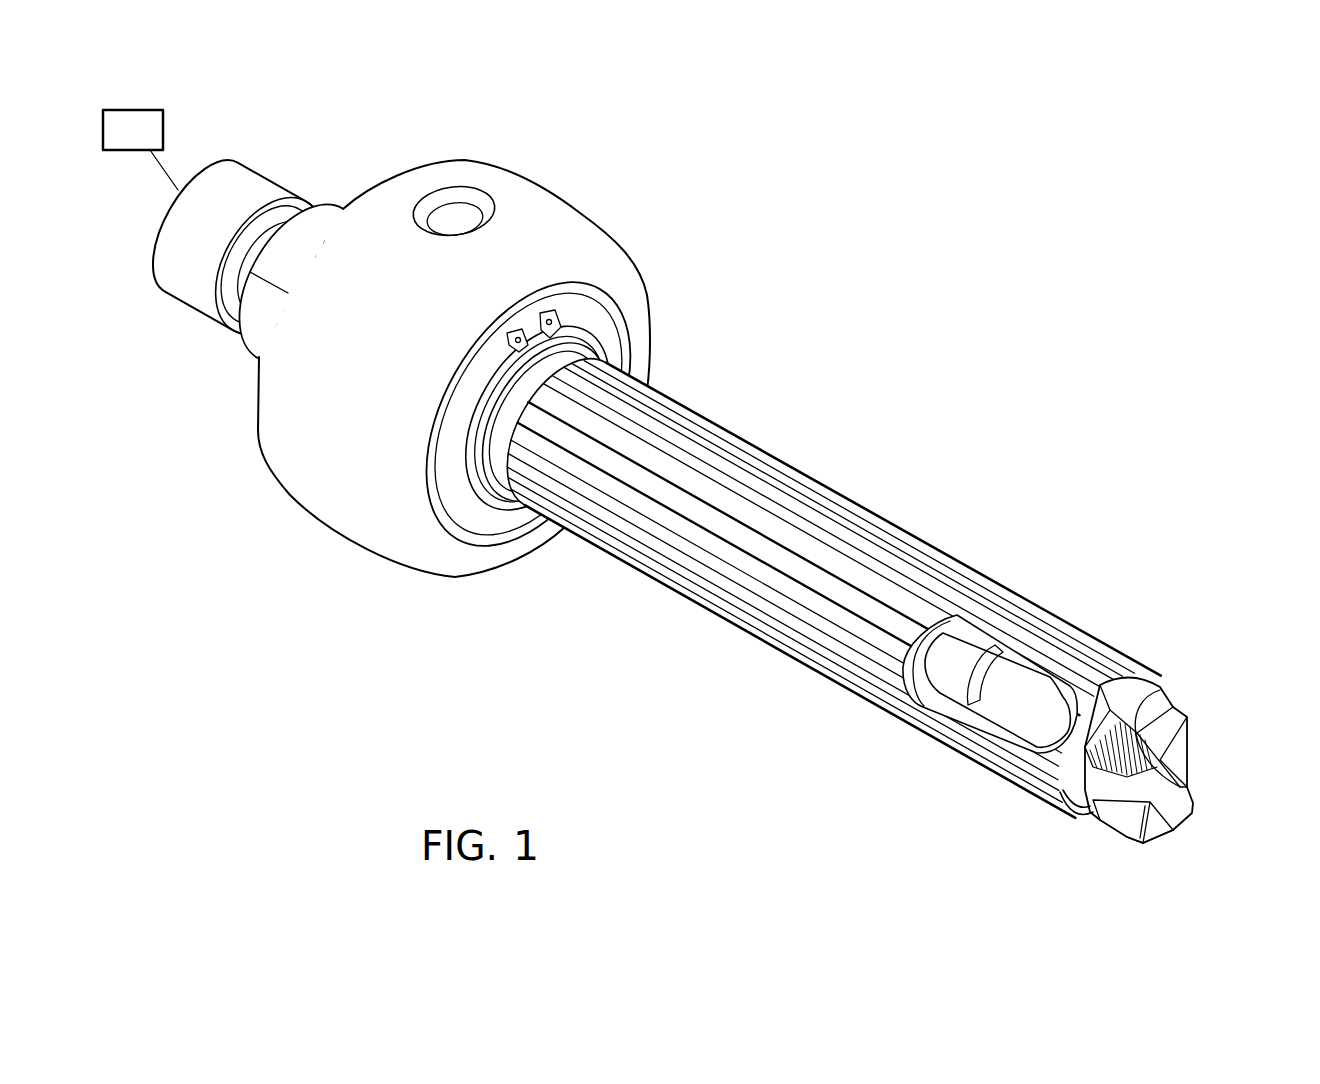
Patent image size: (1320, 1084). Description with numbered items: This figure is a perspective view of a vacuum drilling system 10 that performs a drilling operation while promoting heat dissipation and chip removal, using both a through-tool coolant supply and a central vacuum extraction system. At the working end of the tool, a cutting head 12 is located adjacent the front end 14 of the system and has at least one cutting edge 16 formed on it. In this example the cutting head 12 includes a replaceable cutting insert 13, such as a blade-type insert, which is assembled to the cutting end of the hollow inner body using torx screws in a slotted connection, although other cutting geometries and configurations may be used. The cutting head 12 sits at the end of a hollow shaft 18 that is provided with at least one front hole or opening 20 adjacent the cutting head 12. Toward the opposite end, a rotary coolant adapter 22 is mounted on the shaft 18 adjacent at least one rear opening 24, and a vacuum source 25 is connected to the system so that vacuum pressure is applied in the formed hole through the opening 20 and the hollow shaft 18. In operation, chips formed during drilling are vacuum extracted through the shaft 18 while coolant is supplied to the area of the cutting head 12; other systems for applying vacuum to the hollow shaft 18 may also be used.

The vacuum drilling system 10 is at (897, 272).
The cutting head 12 is at (1185, 812).
The replaceable cutting insert 13 is at (1188, 767).
The front end 14 is at (1141, 866).
The cutting edge 16 is at (1121, 772).
The hollow shaft 18 is at (844, 530).
The front opening 20 is at (1022, 698).
The rotary coolant adapter 22 is at (320, 483).
The rear opening 24 is at (231, 181).
The vacuum source 25 is at (127, 108).